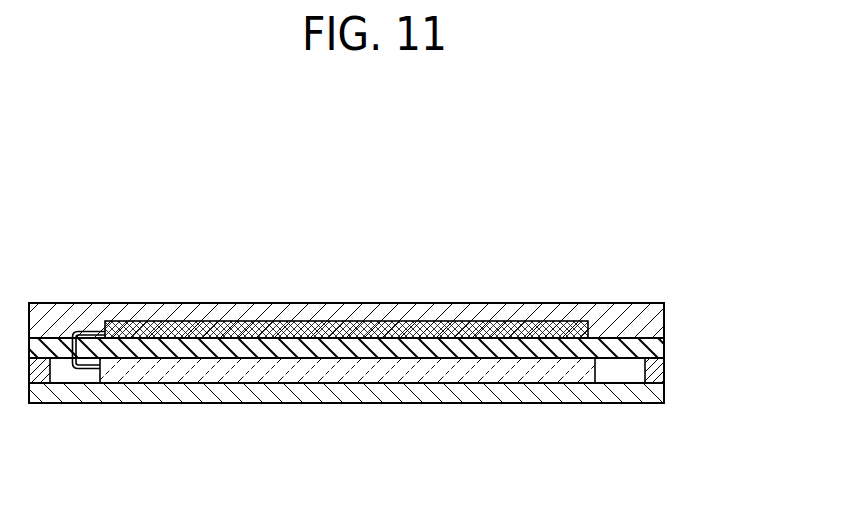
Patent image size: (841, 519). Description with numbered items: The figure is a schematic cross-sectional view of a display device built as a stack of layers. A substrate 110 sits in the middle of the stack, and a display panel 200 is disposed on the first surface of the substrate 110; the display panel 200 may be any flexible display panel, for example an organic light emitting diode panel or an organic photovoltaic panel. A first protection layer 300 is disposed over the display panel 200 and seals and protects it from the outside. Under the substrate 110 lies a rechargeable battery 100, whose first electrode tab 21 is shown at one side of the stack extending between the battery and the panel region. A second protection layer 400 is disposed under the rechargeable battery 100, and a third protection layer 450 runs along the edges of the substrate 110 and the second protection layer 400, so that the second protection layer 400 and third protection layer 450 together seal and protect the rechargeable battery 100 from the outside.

The first electrode tab 21 is at (71, 369).
The rechargeable battery 100 is at (157, 370).
The substrate 110 is at (647, 348).
The display panel 200 is at (482, 332).
The first protection layer 300 is at (647, 314).
The second protection layer 400 is at (622, 392).
The third protection layer 450 is at (655, 371).